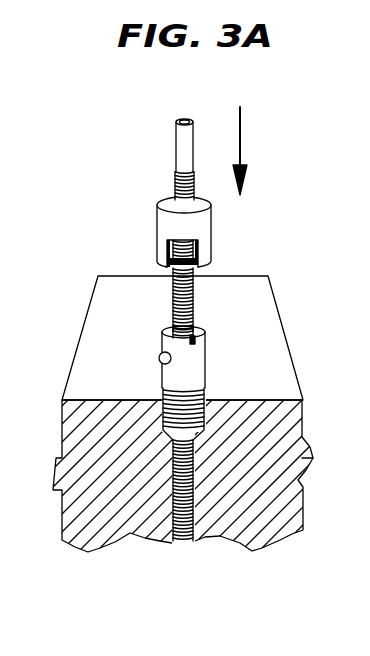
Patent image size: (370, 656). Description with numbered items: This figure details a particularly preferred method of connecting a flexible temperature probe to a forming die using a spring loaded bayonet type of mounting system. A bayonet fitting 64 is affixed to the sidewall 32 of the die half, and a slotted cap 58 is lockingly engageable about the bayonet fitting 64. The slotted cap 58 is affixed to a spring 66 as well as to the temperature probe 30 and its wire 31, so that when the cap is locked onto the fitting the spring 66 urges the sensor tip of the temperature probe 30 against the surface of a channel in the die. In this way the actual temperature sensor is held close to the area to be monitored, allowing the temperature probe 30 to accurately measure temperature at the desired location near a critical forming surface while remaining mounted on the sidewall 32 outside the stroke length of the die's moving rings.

The temperature probe 30 is at (183, 118).
The wire 31 is at (176, 142).
The slotted cap 58 is at (168, 197).
The sidewall 32 is at (98, 320).
The bayonet fitting 64 is at (205, 368).
The spring 66 is at (195, 316).